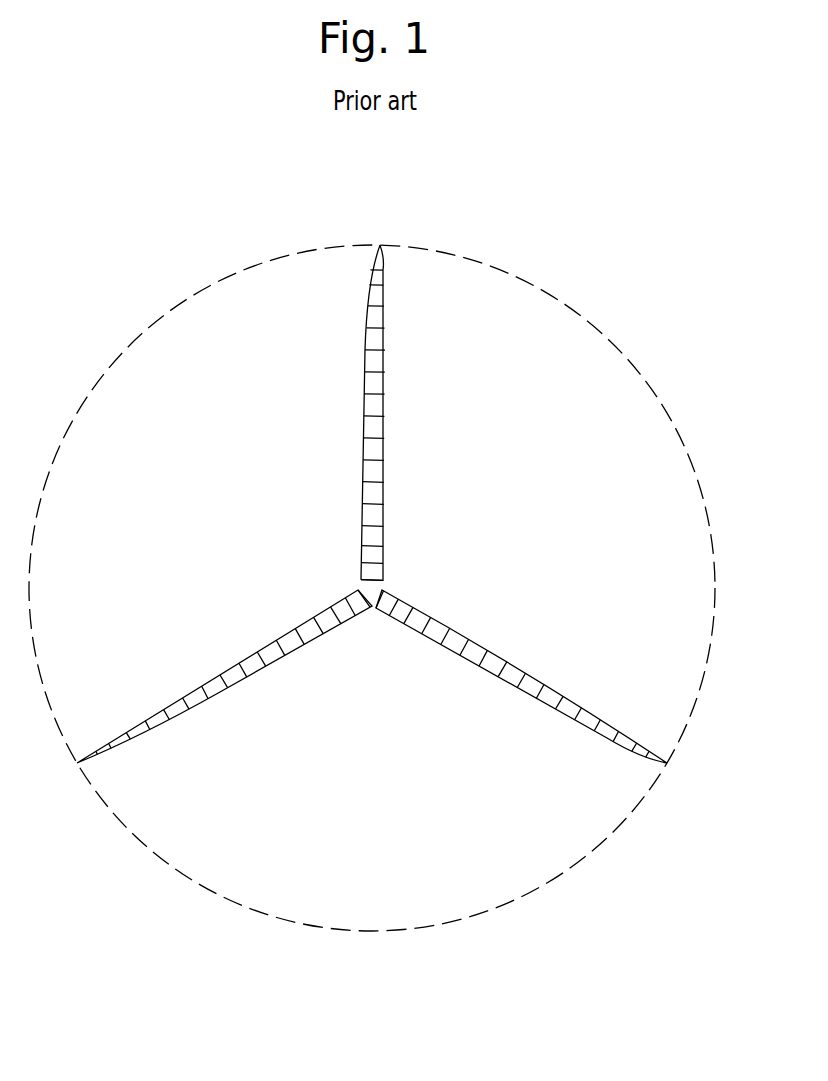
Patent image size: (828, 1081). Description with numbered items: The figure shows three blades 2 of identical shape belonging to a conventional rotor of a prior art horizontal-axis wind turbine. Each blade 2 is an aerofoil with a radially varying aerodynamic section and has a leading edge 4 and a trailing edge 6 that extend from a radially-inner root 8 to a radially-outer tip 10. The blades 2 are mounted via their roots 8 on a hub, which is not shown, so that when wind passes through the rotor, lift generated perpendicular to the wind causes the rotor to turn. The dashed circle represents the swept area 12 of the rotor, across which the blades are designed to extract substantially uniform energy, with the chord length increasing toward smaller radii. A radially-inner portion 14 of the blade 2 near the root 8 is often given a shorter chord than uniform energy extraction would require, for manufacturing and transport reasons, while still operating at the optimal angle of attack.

The blade 2 is at (443, 437).
The leading edge 4 is at (386, 388).
The trailing edge 6 is at (365, 414).
The root 8 is at (372, 588).
The tip 10 is at (380, 245).
The swept area 12 is at (612, 340).
The radially-inner portion 14 is at (350, 520).